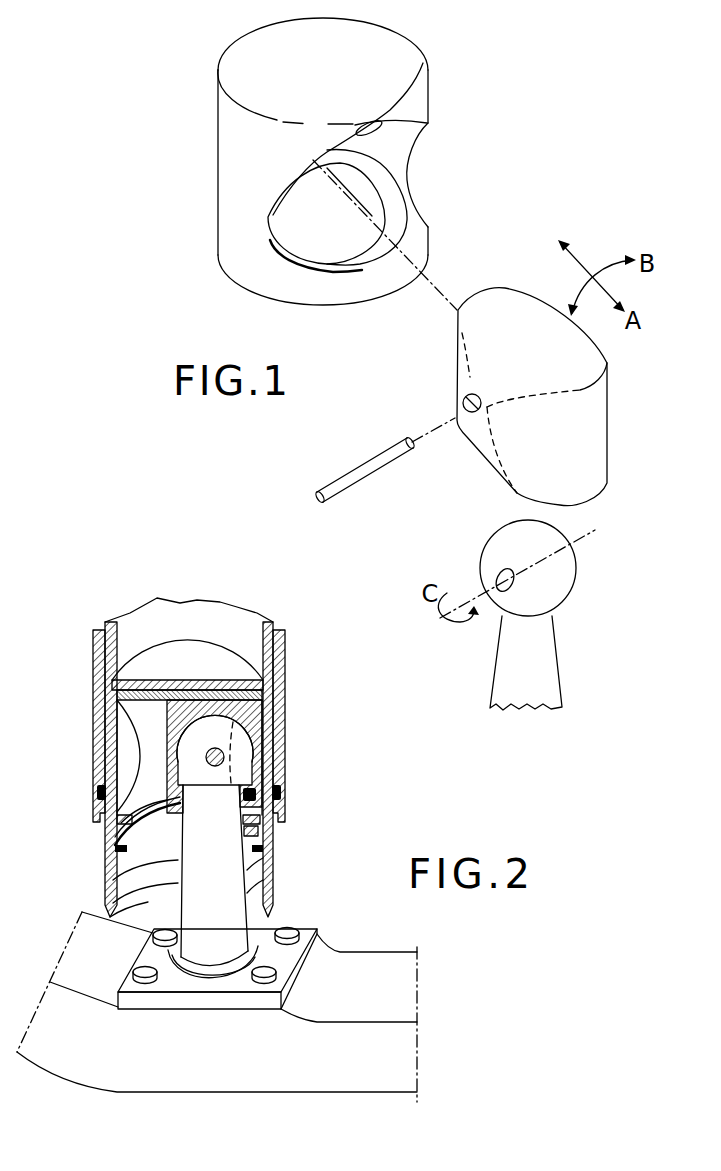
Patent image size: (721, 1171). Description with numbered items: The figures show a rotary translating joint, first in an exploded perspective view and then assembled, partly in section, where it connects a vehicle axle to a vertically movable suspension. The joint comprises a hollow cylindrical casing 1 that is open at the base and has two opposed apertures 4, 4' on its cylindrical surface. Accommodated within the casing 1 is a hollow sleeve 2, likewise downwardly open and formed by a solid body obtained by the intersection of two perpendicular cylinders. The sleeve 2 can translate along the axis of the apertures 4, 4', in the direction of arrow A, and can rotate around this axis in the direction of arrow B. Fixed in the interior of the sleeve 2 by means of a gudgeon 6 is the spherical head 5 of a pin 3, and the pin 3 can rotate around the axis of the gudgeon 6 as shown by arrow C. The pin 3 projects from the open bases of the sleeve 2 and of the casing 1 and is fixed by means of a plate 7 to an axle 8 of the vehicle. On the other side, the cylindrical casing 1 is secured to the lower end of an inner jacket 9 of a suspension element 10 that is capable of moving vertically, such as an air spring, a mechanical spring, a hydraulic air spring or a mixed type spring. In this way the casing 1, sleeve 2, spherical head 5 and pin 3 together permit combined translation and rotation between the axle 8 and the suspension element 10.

In FIG. 1, the hollow cylindrical casing 1 is at (233, 132).
In FIG. 2, the hollow cylindrical casing 1 is at (155, 750).
In FIG. 1, the hollow sleeve 2 is at (593, 437).
In FIG. 2, the hollow sleeve 2 is at (253, 717).
In FIG. 1, the pin 3 is at (508, 662).
In FIG. 2, the pin 3 is at (237, 880).
In FIG. 1, the aperture 4 is at (368, 167).
In FIG. 2, the aperture 4 is at (281, 766).
In FIG. 1, the aperture 4' is at (402, 74).
In FIG. 2, the aperture 4' is at (99, 756).
In FIG. 1, the spherical head 5 is at (560, 580).
In FIG. 2, the spherical head 5 is at (193, 737).
In FIG. 1, the gudgeon 6 is at (372, 470).
In FIG. 2, the gudgeon 6 is at (216, 750).
In FIG. 2, the plate 7 is at (293, 957).
In FIG. 2, the axle 8 is at (390, 1063).
In FIG. 2, the inner jacket 9 is at (112, 867).
In FIG. 2, the suspension element 10 is at (88, 641).